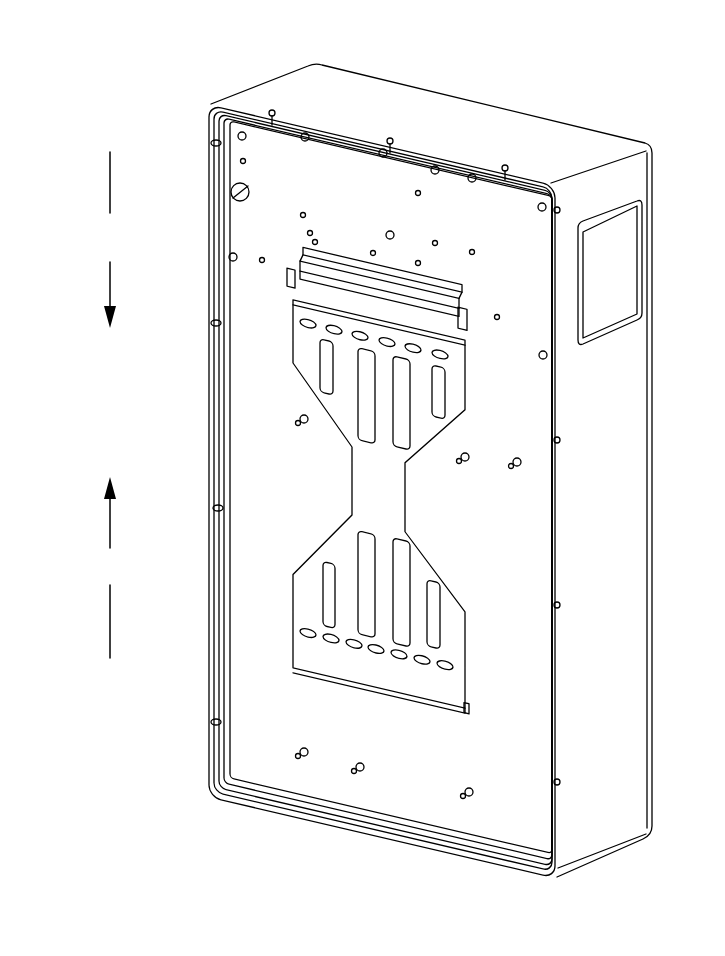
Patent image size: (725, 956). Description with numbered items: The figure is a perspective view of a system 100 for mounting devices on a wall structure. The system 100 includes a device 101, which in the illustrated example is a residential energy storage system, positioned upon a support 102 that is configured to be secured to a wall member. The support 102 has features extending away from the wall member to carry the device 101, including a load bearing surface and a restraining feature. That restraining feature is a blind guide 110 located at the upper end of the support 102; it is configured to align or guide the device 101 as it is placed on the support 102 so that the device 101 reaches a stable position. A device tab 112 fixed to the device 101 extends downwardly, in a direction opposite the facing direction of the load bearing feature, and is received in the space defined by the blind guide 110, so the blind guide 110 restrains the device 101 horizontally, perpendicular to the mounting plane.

The system 100 is at (170, 40).
The device 101 is at (506, 110).
The support 102 is at (343, 362).
The blind guide 110 is at (291, 250).
The device tab 112 is at (342, 272).